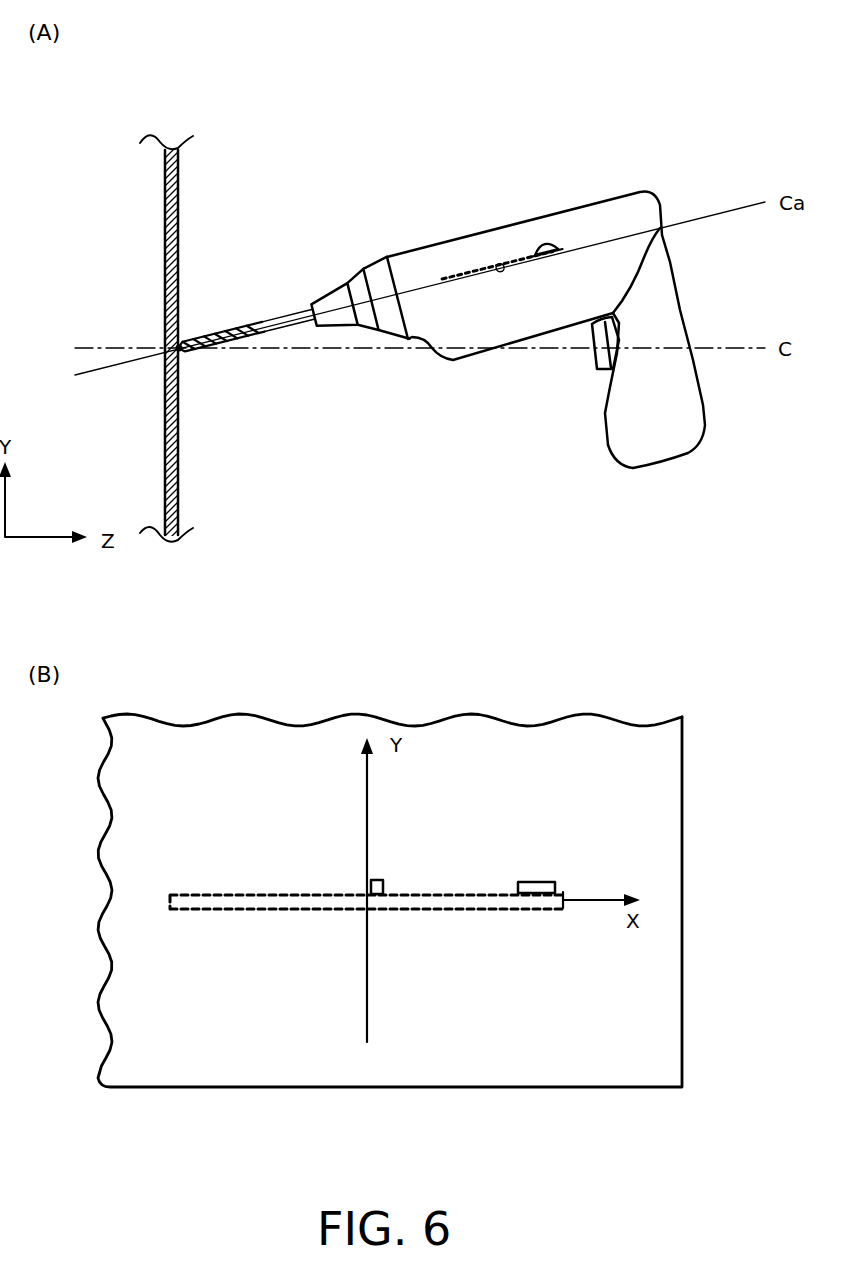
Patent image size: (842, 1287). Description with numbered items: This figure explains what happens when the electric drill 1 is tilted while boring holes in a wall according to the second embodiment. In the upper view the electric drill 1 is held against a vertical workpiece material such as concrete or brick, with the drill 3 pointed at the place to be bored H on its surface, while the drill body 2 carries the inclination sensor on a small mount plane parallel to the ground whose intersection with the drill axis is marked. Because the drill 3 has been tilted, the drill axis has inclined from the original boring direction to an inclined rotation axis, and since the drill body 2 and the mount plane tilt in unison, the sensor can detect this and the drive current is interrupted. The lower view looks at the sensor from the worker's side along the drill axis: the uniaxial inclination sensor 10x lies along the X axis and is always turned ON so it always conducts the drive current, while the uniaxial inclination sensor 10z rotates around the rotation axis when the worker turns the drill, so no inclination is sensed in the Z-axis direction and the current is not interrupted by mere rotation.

The electric drill 1 is at (428, 306).
The drill body 2 is at (608, 217).
The drill 3 is at (288, 320).
The uniaxial inclination sensor 10z is at (378, 880).
The uniaxial inclination sensor 10x is at (537, 882).
The place to be bored H is at (184, 346).